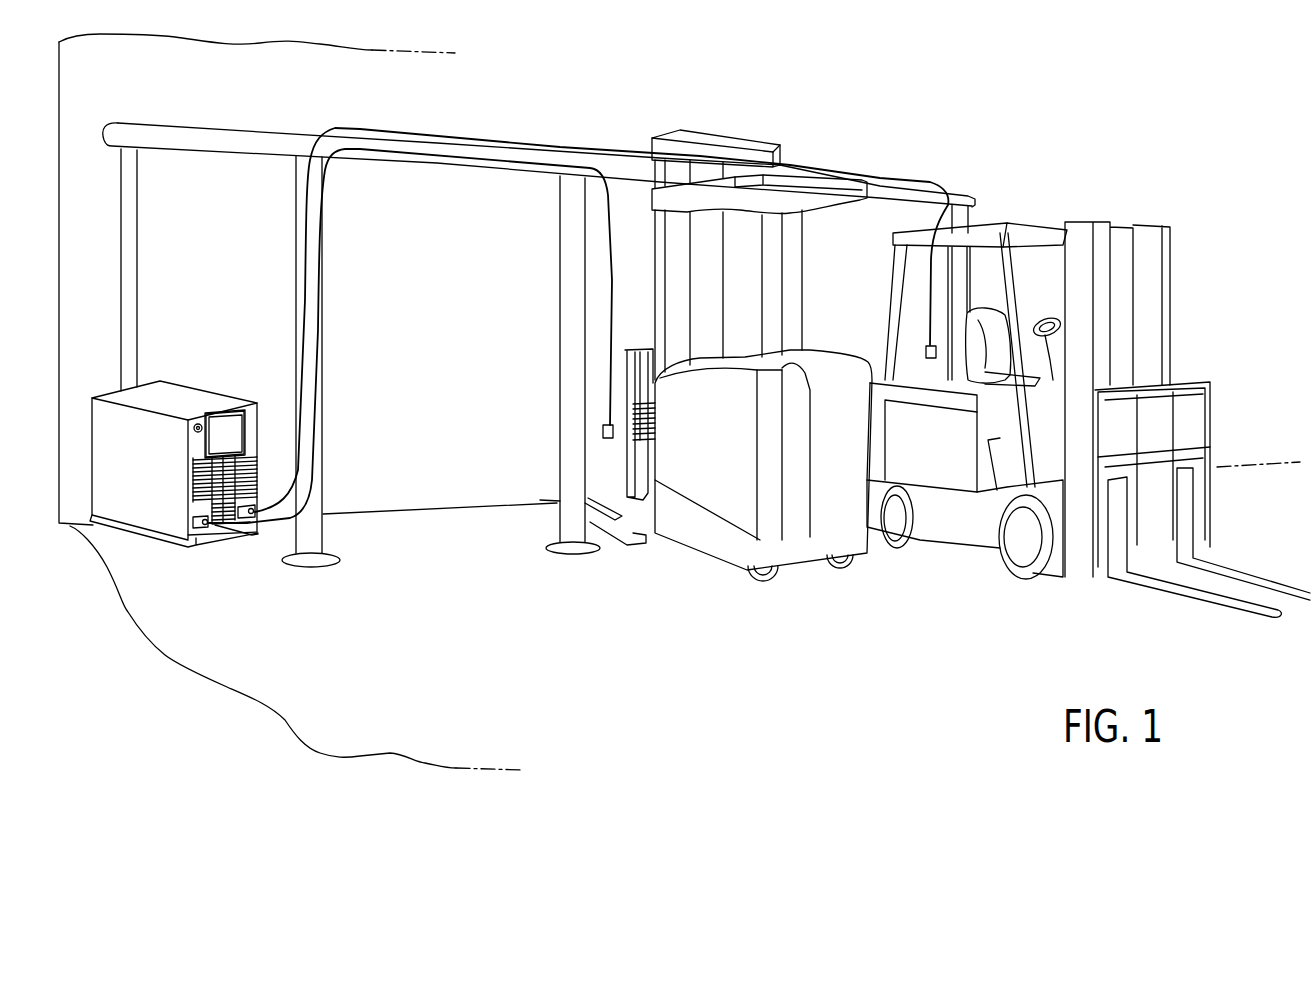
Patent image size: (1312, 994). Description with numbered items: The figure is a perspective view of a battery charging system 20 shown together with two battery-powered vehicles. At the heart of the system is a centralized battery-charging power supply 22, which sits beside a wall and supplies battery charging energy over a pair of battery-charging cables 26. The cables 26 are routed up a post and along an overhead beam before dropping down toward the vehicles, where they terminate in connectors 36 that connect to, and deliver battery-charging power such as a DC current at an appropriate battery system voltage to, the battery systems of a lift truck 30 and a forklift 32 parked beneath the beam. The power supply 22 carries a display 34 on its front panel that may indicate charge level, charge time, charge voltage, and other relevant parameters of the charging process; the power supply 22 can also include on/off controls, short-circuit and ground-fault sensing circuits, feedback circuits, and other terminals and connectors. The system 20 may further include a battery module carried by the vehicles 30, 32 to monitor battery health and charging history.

The battery charging system 20 is at (926, 105).
The battery-charging power supply 22 is at (157, 538).
The battery-charging cables 26 is at (525, 140).
The lift truck 30 is at (708, 540).
The forklift 32 is at (970, 543).
The display 34 is at (238, 435).
The cable connectors 36 is at (600, 428).